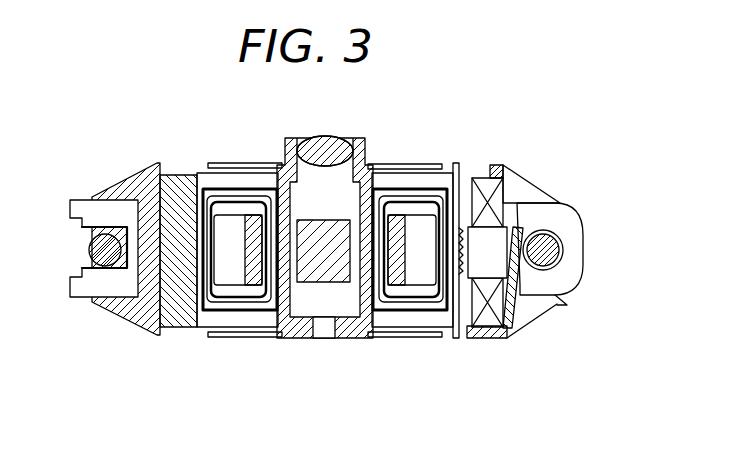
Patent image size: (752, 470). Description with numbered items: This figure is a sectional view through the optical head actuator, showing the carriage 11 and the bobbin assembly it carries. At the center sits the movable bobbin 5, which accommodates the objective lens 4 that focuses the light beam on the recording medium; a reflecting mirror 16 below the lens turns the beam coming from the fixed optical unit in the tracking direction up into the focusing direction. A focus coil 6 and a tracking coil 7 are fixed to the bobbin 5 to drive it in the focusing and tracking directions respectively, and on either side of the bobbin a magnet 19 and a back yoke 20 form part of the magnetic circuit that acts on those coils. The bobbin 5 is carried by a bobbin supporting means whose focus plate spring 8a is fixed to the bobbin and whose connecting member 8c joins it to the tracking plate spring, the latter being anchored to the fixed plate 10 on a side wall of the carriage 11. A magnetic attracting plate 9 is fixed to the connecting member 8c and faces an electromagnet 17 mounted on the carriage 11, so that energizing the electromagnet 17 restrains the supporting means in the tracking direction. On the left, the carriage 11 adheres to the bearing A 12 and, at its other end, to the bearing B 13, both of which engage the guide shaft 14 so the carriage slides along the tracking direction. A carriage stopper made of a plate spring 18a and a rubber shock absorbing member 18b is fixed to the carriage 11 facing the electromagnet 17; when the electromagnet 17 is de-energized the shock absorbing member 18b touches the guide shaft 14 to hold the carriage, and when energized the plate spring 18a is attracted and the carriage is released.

The objective lens 4 is at (317, 143).
The movable bobbin 5 is at (370, 155).
The focus coil 6 is at (257, 195).
The tracking coil 7 is at (230, 188).
The focus plate spring 8a is at (428, 166).
The connecting member 8c is at (458, 182).
The magnetic attracting plate 9 is at (462, 255).
The fixed plate 10 is at (177, 183).
The carriage 11 is at (127, 312).
The bearing A 12 is at (568, 270).
The bearing B 13 is at (75, 285).
The guide shaft 14 is at (98, 248).
The reflecting mirror 16 is at (312, 268).
The electromagnet 17 is at (490, 238).
The plate spring 18a is at (550, 298).
The shock absorbing member 18b is at (520, 228).
The magnet 19 is at (252, 278).
The back yoke 20 is at (212, 302).